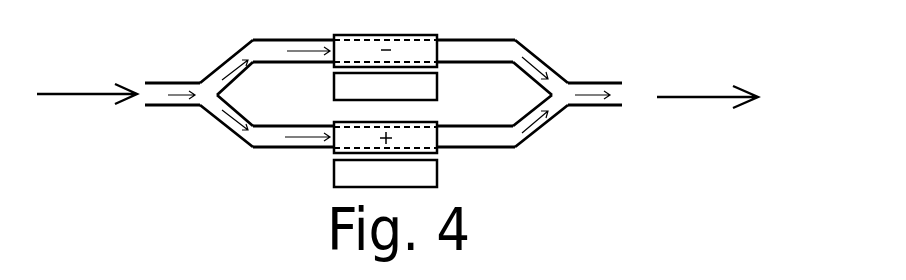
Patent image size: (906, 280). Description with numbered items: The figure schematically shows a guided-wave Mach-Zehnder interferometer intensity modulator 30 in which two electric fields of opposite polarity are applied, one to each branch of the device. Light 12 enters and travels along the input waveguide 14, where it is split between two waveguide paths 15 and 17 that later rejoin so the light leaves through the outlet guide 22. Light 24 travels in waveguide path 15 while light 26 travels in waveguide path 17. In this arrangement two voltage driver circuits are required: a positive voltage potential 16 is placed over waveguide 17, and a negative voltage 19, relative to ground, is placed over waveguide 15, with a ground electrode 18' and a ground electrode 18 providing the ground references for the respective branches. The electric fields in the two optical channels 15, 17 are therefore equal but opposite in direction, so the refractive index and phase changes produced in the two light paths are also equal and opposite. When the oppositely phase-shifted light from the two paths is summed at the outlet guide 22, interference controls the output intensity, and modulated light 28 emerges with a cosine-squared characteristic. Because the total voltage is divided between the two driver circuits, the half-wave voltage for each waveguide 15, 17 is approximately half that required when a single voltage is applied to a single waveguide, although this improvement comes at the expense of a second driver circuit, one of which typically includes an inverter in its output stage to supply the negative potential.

The Mach-Zehnder interferometer intensity modulator 30 is at (189, 29).
The light 12 is at (92, 95).
The waveguide 14 is at (176, 87).
The waveguide path 15 is at (312, 44).
The waveguide path 17 is at (316, 130).
The light 24 is at (303, 56).
The light 26 is at (302, 140).
The negative voltage 19 is at (424, 46).
The positive voltage potential 16 is at (420, 131).
The ground electrode 18' is at (405, 87).
The ground electrode 18 is at (404, 174).
The outlet guide 22 is at (584, 84).
The modulated light 28 is at (702, 97).